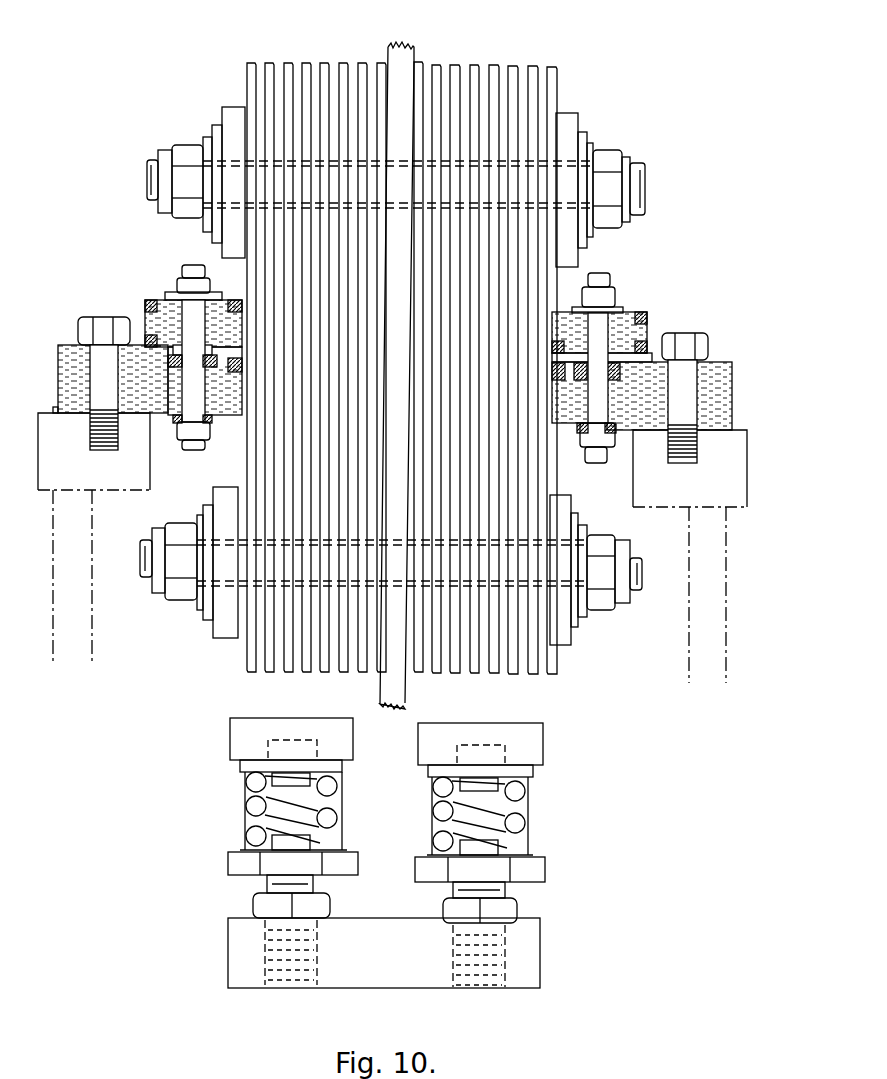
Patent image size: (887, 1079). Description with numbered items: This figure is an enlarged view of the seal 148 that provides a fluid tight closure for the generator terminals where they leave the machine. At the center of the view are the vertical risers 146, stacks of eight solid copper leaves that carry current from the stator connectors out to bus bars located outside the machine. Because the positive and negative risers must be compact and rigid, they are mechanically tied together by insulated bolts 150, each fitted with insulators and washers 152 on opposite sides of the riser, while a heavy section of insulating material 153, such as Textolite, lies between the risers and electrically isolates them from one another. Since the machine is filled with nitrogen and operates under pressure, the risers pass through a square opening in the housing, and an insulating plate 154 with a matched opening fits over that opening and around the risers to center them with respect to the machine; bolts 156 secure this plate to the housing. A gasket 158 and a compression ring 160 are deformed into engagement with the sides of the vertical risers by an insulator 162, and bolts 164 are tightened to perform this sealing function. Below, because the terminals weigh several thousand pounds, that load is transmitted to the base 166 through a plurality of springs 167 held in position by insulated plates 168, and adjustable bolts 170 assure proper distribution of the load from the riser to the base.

The vertical risers 146 is at (320, 48).
The seal 148 is at (725, 250).
The insulated bolts 150 is at (646, 180).
The insulators and washers 152 is at (231, 110).
The insulating material 153 is at (419, 54).
The insulating plate 154 is at (719, 372).
The bolts 156 is at (688, 343).
The gasket 158 is at (575, 373).
The compression ring 160 is at (590, 348).
The insulator 162 is at (567, 330).
The bolts 164 is at (600, 278).
The base 166 is at (388, 970).
The springs 167 is at (335, 818).
The insulated plates 168 is at (538, 872).
The adjustable bolts 170 is at (333, 906).